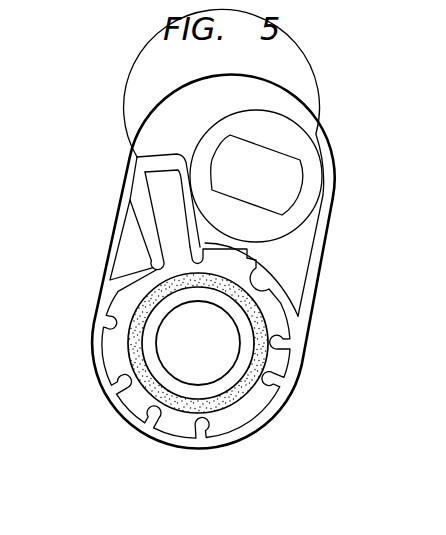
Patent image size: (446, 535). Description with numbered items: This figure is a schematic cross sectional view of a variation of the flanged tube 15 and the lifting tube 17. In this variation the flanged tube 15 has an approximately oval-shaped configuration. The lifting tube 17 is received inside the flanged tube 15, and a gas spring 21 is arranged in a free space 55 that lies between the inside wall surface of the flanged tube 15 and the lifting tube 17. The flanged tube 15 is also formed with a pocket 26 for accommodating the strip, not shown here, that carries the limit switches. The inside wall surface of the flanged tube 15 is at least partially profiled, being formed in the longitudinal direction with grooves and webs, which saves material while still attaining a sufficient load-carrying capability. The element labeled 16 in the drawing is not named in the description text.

The flanged tube 15 is at (319, 268).
The shaft bore 16 is at (212, 356).
The lifting tube 17 is at (131, 352).
The gas spring 21 is at (294, 130).
The pocket 26 is at (149, 180).
The free space 55 is at (187, 106).